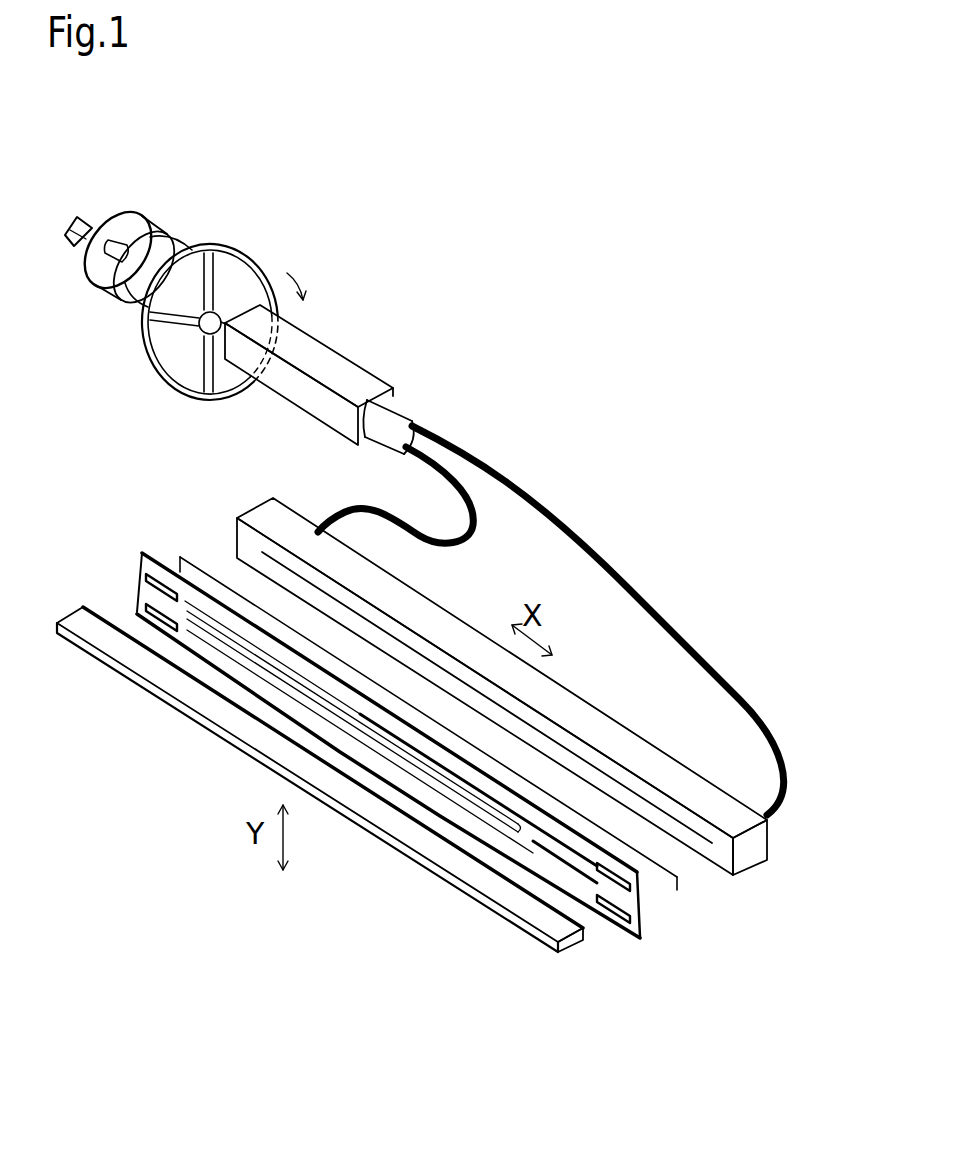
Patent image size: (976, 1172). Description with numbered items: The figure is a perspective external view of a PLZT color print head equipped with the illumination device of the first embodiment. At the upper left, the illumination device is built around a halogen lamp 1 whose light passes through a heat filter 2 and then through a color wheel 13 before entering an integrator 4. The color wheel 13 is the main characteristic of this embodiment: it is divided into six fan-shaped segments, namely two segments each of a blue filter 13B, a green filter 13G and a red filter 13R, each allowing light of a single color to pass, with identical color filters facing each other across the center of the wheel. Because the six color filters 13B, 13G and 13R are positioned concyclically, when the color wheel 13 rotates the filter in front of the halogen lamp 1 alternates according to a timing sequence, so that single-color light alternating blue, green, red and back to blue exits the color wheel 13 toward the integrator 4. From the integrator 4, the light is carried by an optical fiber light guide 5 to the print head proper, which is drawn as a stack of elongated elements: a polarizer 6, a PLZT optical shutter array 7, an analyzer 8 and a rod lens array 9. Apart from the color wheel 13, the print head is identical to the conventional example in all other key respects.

The halogen lamp 1 is at (99, 232).
The heat filter 2 is at (120, 283).
The integrator 4 is at (317, 348).
The optical fiber light guide 5 is at (590, 615).
The polarizer 6 is at (180, 558).
The PLZT optical shutter array 7 is at (645, 915).
The analyzer 8 is at (98, 606).
The rod lens array 9 is at (560, 930).
The color wheel 13 is at (262, 267).
The blue color filter segment 13B is at (201, 255).
The green color filter segment 13G is at (163, 302).
The red color filter segment 13R is at (165, 345).